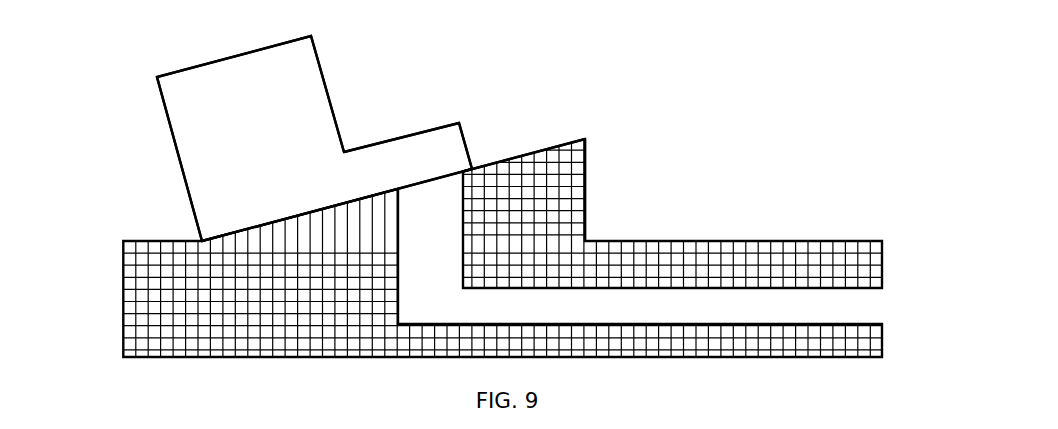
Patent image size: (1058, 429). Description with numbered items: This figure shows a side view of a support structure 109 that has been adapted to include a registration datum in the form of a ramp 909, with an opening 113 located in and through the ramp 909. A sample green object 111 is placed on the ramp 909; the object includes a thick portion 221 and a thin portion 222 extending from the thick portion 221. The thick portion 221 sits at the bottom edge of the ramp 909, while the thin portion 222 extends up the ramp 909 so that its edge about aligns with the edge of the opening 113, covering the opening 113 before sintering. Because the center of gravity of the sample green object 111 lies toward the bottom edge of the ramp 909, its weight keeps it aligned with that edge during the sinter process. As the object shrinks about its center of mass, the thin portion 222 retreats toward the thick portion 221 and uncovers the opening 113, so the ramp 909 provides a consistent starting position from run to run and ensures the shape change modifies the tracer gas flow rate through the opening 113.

The support structure 109 is at (767, 241).
The sample green object 111 is at (176, 154).
The opening 113 is at (478, 156).
The thick portion 221 is at (224, 116).
The thin portion 222 is at (381, 168).
The ramp 909 is at (585, 168).